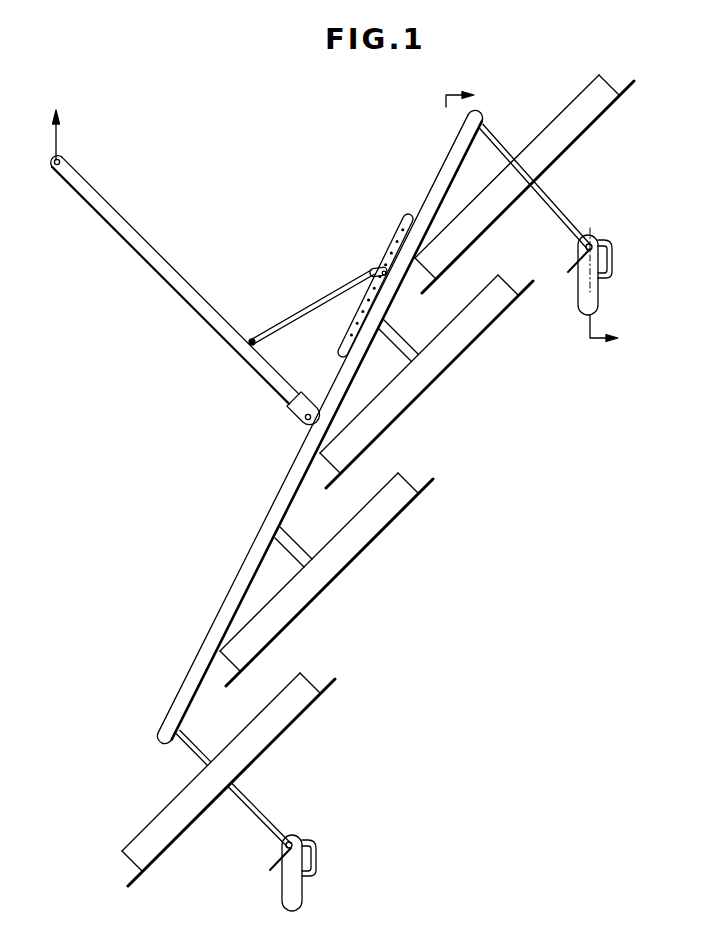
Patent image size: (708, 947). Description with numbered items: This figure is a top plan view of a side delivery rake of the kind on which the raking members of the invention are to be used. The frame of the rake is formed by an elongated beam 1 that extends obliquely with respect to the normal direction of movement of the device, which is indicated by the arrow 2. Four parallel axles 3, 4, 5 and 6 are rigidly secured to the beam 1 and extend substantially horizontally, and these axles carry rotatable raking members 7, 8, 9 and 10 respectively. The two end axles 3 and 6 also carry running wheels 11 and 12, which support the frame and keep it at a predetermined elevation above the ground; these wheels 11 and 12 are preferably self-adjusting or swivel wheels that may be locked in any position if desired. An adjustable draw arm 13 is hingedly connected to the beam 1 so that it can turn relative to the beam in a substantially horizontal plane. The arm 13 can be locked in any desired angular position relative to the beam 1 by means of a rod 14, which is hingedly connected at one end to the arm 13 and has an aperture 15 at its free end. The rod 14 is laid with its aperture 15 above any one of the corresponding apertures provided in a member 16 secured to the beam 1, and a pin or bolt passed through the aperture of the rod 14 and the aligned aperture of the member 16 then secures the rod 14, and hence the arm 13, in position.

The elongated beam 1 is at (212, 639).
The arrow 2 is at (58, 145).
The axle 3 is at (548, 203).
The axle 4 is at (396, 345).
The axle 5 is at (287, 543).
The axle 6 is at (255, 808).
The raking member 7 is at (574, 128).
The raking member 8 is at (469, 341).
The raking member 9 is at (359, 540).
The raking member 10 is at (269, 730).
The running wheel 11 is at (594, 301).
The running wheel 12 is at (300, 893).
The adjustable draw arm 13 is at (168, 271).
The rod 14 is at (320, 299).
The aperture 15 is at (383, 265).
The member 16 is at (410, 222).